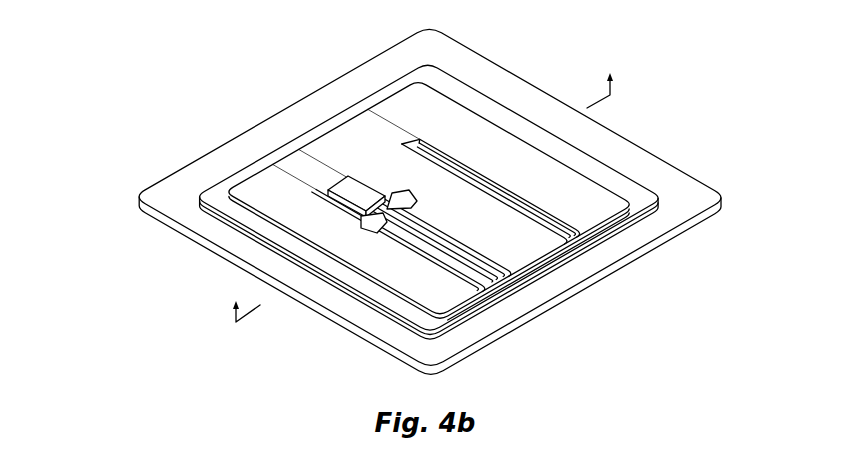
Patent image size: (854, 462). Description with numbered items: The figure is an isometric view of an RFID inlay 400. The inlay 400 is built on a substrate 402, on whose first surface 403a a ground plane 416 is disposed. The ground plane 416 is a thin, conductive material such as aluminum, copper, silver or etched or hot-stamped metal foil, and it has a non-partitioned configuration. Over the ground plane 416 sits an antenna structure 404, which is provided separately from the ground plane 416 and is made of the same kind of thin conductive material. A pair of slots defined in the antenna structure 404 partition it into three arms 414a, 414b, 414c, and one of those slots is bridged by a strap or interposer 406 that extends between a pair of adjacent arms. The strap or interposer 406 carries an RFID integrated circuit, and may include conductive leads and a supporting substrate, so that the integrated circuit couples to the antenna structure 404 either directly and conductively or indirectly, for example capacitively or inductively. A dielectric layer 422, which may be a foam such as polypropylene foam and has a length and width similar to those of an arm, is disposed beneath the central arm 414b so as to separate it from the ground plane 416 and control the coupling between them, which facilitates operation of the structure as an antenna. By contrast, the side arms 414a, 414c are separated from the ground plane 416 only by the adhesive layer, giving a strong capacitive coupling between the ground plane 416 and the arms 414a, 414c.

The inlay 400 is at (149, 27).
The substrate 402 is at (218, 148).
The first surface 403a is at (190, 230).
The antenna structure 404 is at (438, 96).
The strap or interposer 406 is at (385, 197).
The arm 414a is at (401, 286).
The central arm 414b is at (548, 241).
The arm 414c is at (579, 187).
The ground plane 416 is at (655, 201).
The dielectric layer 422 is at (524, 283).